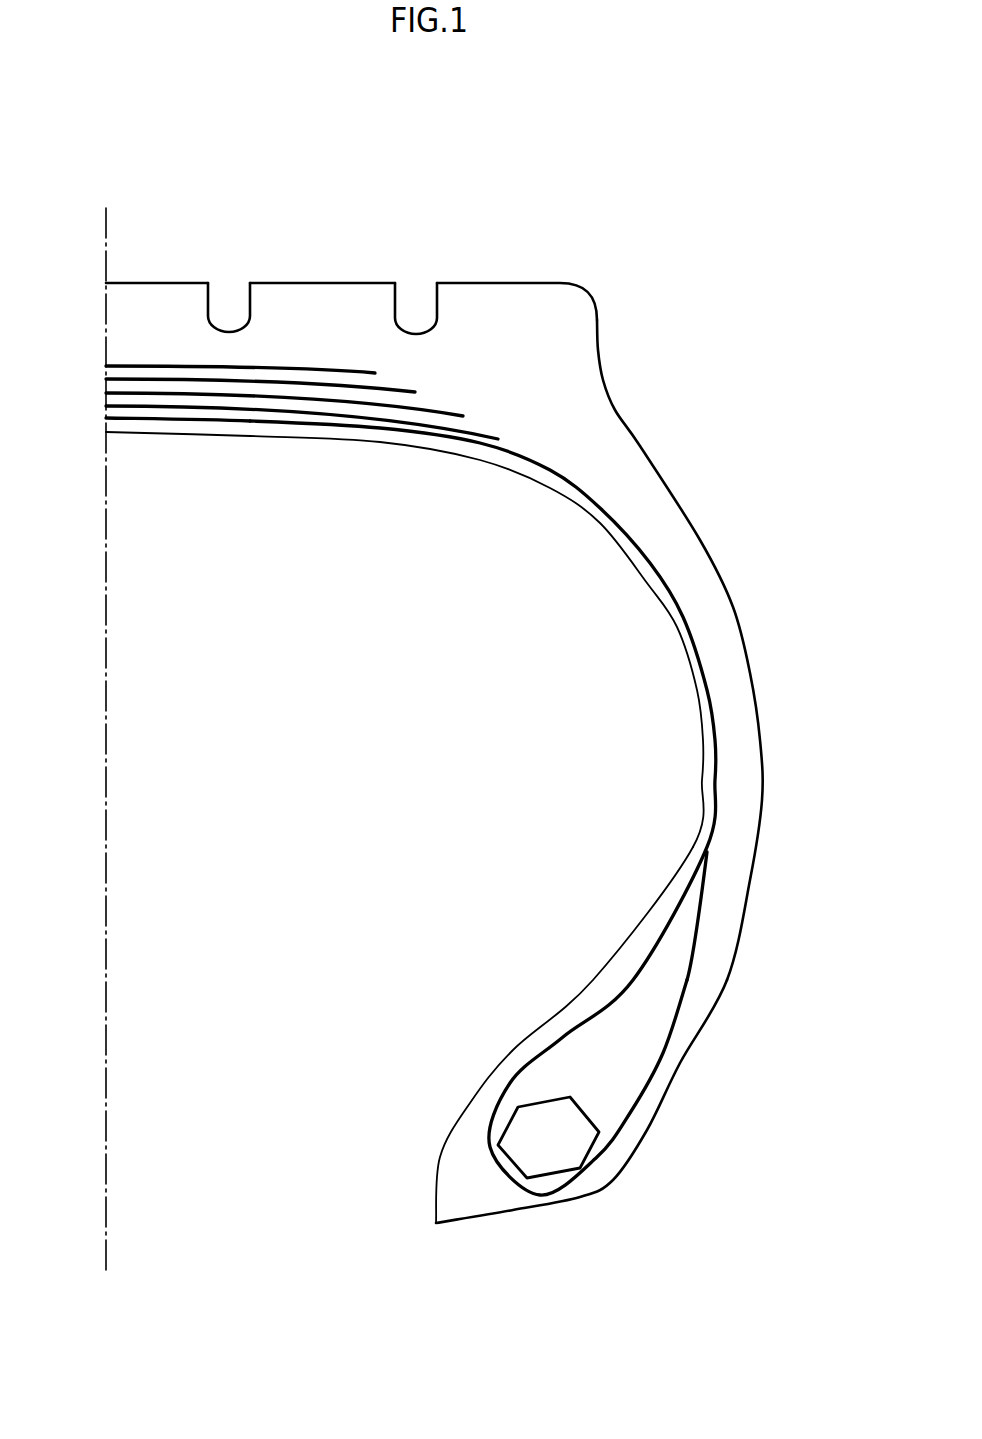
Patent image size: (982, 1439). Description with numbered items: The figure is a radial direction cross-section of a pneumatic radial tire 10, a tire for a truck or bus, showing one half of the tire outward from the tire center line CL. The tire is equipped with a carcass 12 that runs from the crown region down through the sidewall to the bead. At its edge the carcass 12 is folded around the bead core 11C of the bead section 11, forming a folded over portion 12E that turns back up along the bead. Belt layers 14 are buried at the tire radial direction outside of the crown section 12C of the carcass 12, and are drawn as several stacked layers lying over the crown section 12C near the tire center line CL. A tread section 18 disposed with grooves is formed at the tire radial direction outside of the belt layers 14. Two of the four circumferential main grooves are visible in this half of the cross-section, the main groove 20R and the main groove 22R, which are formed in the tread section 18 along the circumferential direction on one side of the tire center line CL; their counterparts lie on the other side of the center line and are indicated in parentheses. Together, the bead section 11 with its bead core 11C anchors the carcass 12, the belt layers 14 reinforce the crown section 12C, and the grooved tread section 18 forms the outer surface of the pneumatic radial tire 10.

The pneumatic radial tire 10 is at (734, 221).
The bead section 11 is at (444, 1268).
The bead core 11C is at (518, 1135).
The carcass 12 is at (678, 610).
The crown section 12C is at (135, 421).
The folded over portion 12E is at (697, 943).
The belt layer 14 is at (100, 365).
The tread section 18 is at (338, 151).
The main groove 20R is at (245, 300).
The main groove 22R is at (398, 297).
The tire center line CL is at (106, 230).